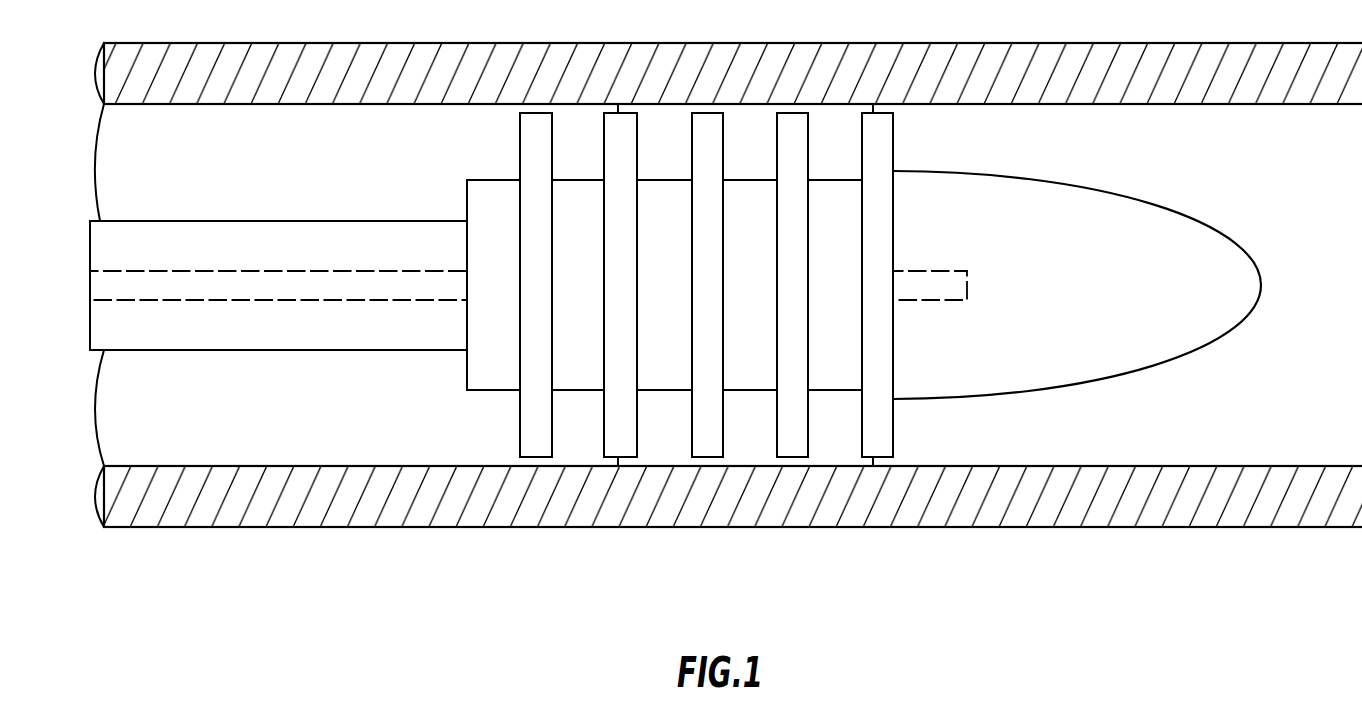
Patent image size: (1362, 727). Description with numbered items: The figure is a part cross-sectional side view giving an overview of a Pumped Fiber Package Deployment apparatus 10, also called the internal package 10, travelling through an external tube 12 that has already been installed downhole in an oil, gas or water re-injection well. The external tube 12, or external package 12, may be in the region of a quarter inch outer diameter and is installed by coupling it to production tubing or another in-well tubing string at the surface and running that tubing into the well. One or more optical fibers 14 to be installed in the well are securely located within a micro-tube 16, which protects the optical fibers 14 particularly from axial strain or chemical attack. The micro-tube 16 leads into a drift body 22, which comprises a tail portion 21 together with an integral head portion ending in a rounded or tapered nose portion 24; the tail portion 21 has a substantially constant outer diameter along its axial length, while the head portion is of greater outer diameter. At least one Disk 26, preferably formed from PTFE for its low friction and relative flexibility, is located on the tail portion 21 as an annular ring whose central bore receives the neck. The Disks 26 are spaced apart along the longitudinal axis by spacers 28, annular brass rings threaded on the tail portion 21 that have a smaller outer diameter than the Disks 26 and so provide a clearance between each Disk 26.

The Pumped Fiber Package Deployment apparatus 10 is at (880, 355).
The external tube 12 is at (1015, 527).
The optical fiber 14 is at (415, 300).
The micro-tube 16 is at (252, 324).
The tail portion 21 is at (583, 422).
The drift body 22 is at (1150, 283).
The nose portion 24 is at (1260, 267).
The Disk 26 is at (687, 213).
The spacer 28 is at (755, 217).